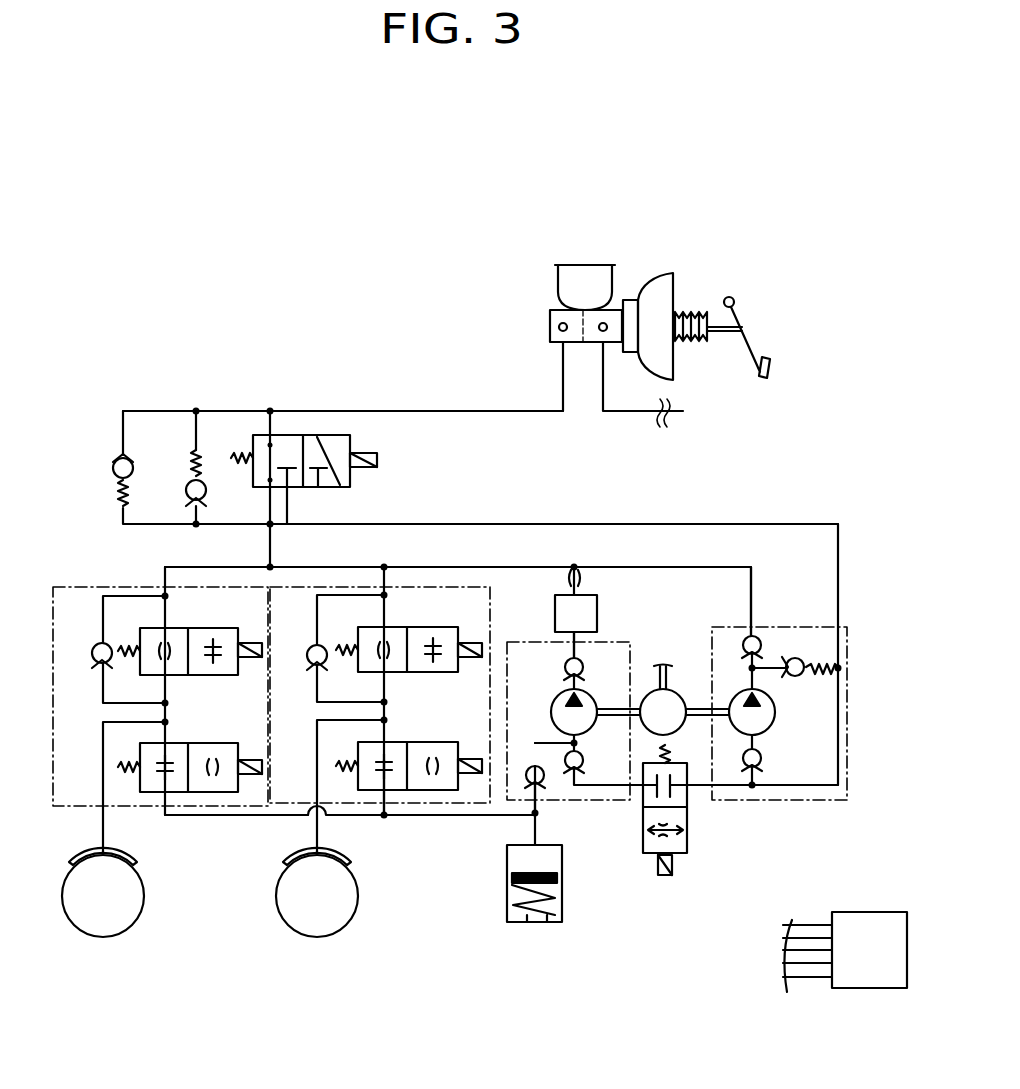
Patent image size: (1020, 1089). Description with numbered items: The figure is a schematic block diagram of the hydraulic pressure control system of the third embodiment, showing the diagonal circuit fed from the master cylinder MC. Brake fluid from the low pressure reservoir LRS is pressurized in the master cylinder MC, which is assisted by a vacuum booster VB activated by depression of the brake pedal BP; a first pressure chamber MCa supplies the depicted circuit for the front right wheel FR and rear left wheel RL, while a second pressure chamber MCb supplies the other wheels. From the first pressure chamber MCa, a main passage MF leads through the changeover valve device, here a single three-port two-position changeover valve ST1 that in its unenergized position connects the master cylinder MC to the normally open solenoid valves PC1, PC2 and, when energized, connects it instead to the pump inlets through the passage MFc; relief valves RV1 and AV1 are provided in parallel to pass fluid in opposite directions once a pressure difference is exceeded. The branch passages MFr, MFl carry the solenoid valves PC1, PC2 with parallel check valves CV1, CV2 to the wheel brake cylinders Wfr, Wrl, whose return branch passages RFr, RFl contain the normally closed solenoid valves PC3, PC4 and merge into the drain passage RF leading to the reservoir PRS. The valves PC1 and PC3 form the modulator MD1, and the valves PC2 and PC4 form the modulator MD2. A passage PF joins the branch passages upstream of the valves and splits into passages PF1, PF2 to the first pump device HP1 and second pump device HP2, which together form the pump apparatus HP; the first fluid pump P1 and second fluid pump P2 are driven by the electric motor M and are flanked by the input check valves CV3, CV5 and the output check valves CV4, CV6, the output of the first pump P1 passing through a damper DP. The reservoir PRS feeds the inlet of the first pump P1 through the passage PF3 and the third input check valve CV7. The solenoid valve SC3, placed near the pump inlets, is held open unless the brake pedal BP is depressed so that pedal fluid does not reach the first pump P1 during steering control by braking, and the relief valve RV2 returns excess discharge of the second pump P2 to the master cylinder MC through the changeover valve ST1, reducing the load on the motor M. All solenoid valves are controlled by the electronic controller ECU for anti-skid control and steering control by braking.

The low pressure reservoir LRS is at (560, 290).
The master cylinder MC is at (550, 320).
The first pressure chamber MCa is at (551, 335).
The second pressure chamber MCb is at (610, 338).
The vacuum booster VB is at (673, 358).
The brake pedal BP is at (747, 333).
The main passage MF is at (430, 410).
The relief valve AV1 is at (113, 482).
The relief valve RV1 is at (187, 474).
The changeover valve ST1 is at (352, 485).
The passage MFc is at (615, 524).
The branch passage MFr is at (165, 578).
The passage PF is at (532, 564).
The passage PF2 is at (701, 564).
The modulator MD1 is at (64, 578).
The modulator MD2 is at (492, 600).
The check valve CV1 is at (97, 647).
The check valve CV2 is at (308, 652).
The first input check valve CV3 is at (580, 758).
The first output check valve CV4 is at (567, 667).
The second input check valve CV5 is at (758, 762).
The second output check valve CV6 is at (758, 644).
The third input check valve CV7 is at (540, 785).
The solenoid valve PC1 is at (190, 625).
The solenoid valve PC2 is at (407, 672).
The solenoid valve PC3 is at (188, 743).
The solenoid valve PC4 is at (405, 742).
The branch passage MFl is at (386, 612).
The branch passage RFl is at (373, 803).
The branch passage RFr is at (187, 817).
The drain passage RF is at (432, 817).
The wheel FR is at (103, 896).
The wheel RL is at (317, 896).
The wheel brake cylinder Wfr is at (79, 858).
The wheel brake cylinder Wrl is at (298, 847).
The damper DP is at (576, 601).
The first pump device HP1 is at (600, 800).
The second pump device HP2 is at (768, 805).
The pump apparatus HP is at (746, 832).
The passage PF1 is at (577, 653).
The passage PF3 is at (555, 742).
The first fluid pump P1 is at (574, 712).
The second fluid pump P2 is at (752, 712).
The electric motor M is at (663, 700).
The relief valve RV2 is at (800, 678).
The solenoid valve SC3 is at (690, 850).
The reservoir PRS is at (507, 892).
The electronic controller ECU is at (845, 952).